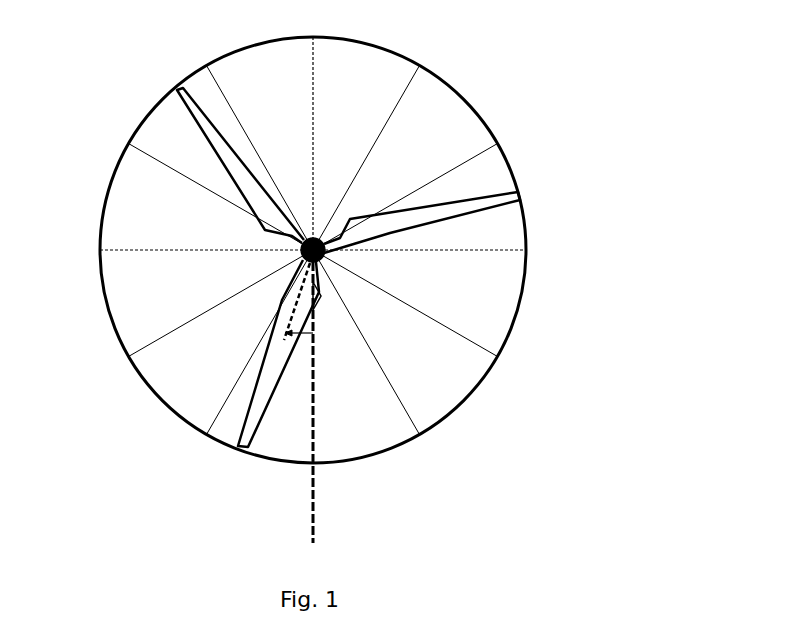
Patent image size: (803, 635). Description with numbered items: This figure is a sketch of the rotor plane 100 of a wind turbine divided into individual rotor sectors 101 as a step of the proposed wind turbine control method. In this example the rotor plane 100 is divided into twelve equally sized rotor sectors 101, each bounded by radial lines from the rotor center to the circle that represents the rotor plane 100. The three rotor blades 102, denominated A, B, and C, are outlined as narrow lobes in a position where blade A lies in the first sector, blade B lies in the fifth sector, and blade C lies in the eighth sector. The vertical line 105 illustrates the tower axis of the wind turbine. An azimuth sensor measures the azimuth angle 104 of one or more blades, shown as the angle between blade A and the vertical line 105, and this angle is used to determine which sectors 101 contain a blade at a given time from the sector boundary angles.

The rotor plane 100 is at (405, 56).
The rotor sectors 101 is at (170, 352).
The rotor blades 102 is at (178, 100).
The azimuth angle 104 is at (314, 343).
The vertical line 105 is at (315, 503).